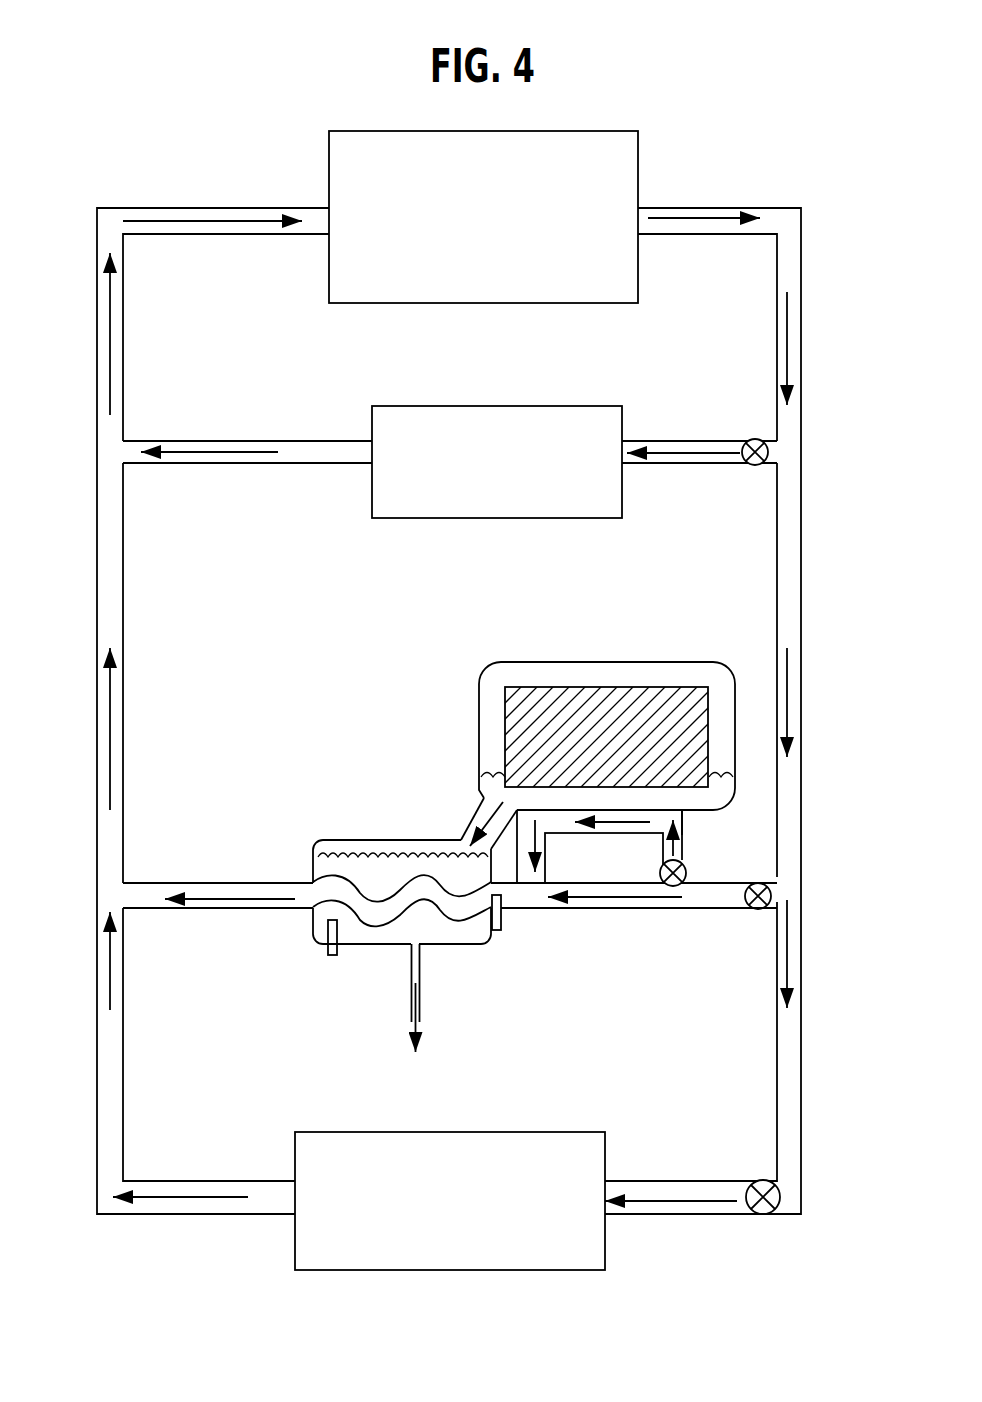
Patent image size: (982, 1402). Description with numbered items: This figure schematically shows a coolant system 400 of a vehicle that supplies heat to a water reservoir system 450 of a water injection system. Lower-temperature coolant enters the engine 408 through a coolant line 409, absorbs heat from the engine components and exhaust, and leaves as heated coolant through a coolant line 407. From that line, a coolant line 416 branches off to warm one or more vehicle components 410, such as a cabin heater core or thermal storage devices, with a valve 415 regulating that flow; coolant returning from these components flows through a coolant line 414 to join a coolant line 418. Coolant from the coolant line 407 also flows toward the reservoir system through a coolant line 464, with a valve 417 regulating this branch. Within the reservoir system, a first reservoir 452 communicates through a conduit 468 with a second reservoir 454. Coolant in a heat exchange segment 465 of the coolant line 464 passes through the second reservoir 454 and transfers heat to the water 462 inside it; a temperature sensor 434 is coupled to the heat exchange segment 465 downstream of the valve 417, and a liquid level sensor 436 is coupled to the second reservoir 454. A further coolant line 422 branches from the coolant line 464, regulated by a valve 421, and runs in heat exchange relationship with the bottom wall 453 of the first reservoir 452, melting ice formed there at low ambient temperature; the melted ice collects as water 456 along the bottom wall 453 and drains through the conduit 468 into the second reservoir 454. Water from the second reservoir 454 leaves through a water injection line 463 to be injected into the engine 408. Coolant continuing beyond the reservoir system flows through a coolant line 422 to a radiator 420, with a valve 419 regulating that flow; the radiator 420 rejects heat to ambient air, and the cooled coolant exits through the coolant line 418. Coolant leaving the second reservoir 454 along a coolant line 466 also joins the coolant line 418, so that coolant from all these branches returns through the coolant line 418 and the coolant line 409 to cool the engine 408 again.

The coolant system 400 is at (756, 100).
The coolant line 407 is at (663, 235).
The engine 408 is at (483, 217).
The coolant line 409 is at (198, 235).
The vehicle components 410 is at (497, 462).
The coolant line 414 is at (233, 441).
The valve 415 is at (746, 460).
The coolant line 416 is at (698, 441).
The valve 417 is at (749, 907).
The coolant line 418 is at (123, 567).
The valve 419 is at (760, 1210).
The radiator 420 is at (450, 1201).
The valve 421 is at (668, 887).
The coolant line 422 is at (563, 833).
The temperature sensor 434 is at (500, 923).
The liquid level sensor 436 is at (337, 945).
The water reservoir system 450 is at (664, 614).
The first reservoir 452 is at (599, 724).
The bottom wall 453 is at (687, 814).
The second reservoir 454 is at (382, 874).
The water 456 is at (703, 790).
The water 462 is at (330, 860).
The water injection line 463 is at (420, 982).
The coolant line 464 is at (598, 908).
The heat exchange segment 465 is at (402, 900).
The coolant line 466 is at (157, 882).
The conduit 468 is at (473, 818).